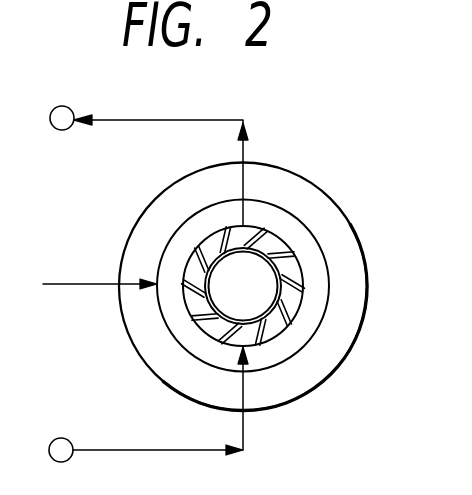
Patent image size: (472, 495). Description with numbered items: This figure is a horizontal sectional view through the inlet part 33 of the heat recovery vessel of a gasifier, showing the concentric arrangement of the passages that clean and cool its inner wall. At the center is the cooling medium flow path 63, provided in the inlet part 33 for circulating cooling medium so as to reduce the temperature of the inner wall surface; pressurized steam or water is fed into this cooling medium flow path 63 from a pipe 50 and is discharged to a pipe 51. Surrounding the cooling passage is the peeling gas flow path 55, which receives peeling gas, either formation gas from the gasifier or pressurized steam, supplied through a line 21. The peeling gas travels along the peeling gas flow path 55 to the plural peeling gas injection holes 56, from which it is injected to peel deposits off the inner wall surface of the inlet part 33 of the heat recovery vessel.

The line 21 is at (58, 285).
The inlet part of heat recovery vessel 33 is at (370, 284).
The pipe 50 is at (60, 437).
The pipe 51 is at (63, 130).
The peeling gas flow path 55 is at (315, 333).
The peeling gas injection holes 56 is at (258, 232).
The cooling medium flow path 63 is at (303, 268).